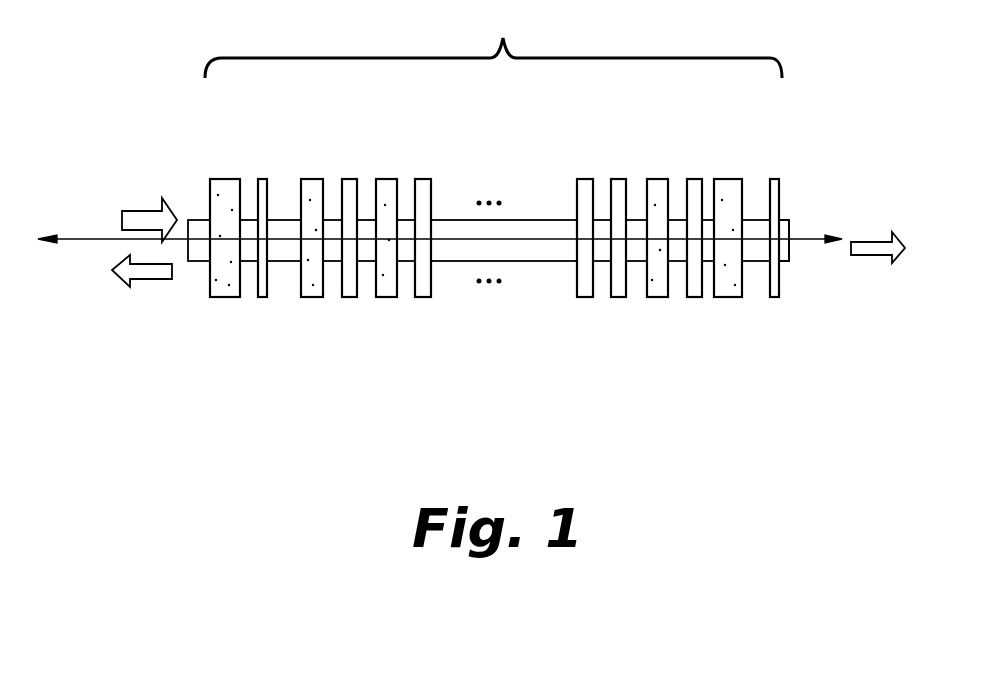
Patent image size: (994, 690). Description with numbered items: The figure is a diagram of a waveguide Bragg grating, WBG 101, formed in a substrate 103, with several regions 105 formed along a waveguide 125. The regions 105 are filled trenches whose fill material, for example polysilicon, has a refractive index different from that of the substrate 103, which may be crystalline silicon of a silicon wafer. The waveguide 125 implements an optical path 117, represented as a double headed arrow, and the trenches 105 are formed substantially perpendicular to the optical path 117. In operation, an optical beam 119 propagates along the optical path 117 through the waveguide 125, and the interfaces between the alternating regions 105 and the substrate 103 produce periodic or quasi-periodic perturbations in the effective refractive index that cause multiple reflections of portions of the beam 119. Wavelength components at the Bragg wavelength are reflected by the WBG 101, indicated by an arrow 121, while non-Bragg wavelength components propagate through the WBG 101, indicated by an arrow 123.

The waveguide Bragg grating 101 is at (488, 190).
The substrate 103 is at (486, 228).
The regions 105 is at (310, 179).
The optical path 117 is at (66, 241).
The optical beam 119 is at (138, 210).
The arrow 121 is at (138, 280).
The arrow 123 is at (871, 255).
The waveguide 125 is at (781, 219).